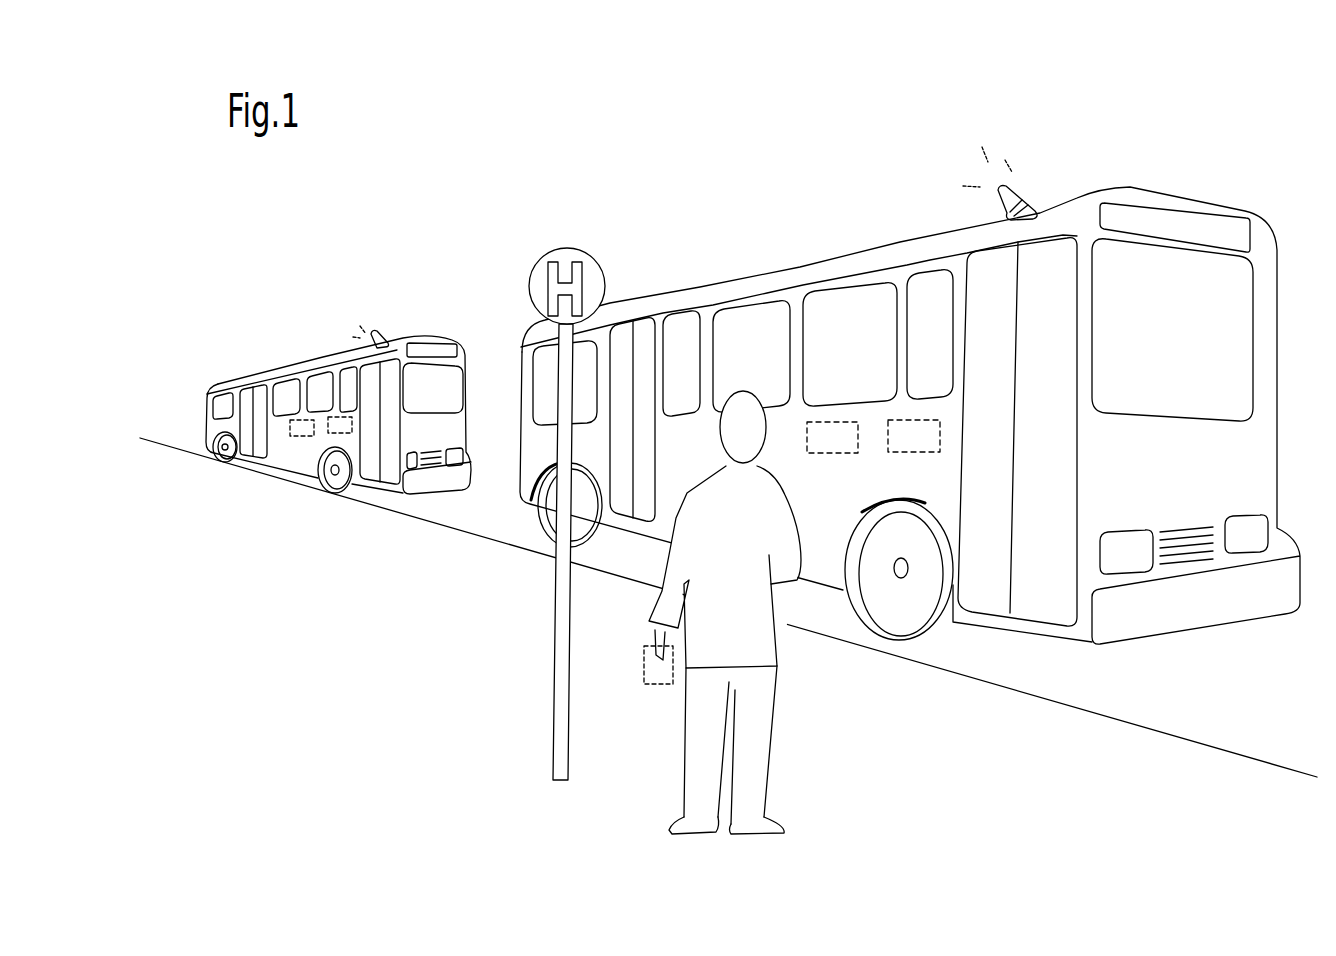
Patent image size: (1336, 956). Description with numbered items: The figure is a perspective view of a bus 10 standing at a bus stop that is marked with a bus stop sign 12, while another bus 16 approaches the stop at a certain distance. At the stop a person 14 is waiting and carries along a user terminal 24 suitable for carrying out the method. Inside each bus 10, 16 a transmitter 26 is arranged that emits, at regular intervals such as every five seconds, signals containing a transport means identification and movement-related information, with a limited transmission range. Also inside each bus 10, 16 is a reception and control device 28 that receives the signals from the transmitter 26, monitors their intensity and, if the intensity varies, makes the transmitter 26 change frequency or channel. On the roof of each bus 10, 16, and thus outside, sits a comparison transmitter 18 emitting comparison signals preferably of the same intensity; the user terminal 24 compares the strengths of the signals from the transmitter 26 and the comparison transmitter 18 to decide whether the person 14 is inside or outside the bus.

The bus 10 is at (1193, 167).
The bus stop sign 12 is at (593, 237).
The person 14 is at (786, 731).
The another bus 16 is at (430, 327).
The comparison transmitter 18 is at (1033, 162).
The user terminal 24 is at (643, 680).
The transmitter 26 is at (812, 456).
The reception and control device 28 is at (895, 455).